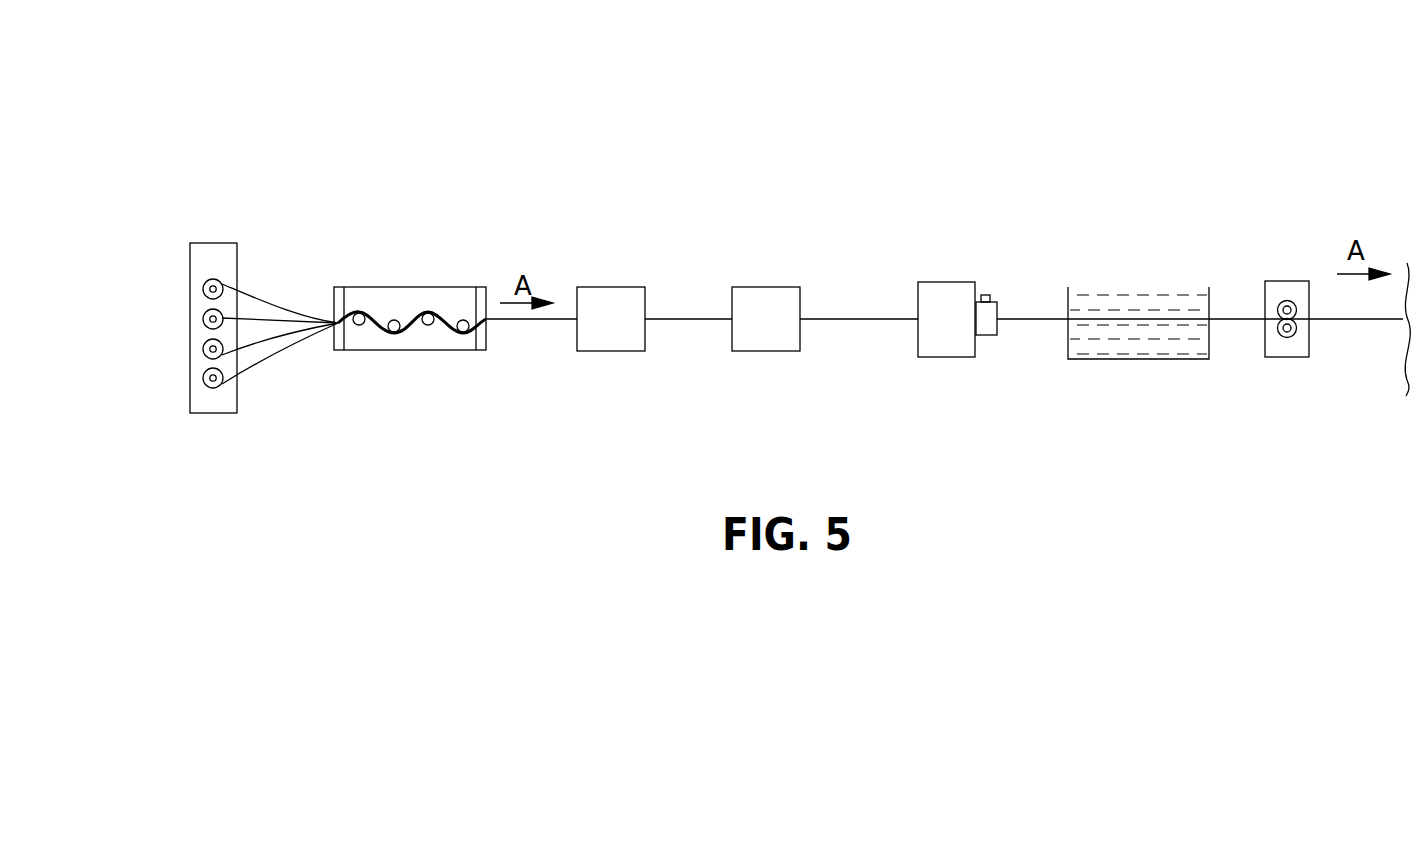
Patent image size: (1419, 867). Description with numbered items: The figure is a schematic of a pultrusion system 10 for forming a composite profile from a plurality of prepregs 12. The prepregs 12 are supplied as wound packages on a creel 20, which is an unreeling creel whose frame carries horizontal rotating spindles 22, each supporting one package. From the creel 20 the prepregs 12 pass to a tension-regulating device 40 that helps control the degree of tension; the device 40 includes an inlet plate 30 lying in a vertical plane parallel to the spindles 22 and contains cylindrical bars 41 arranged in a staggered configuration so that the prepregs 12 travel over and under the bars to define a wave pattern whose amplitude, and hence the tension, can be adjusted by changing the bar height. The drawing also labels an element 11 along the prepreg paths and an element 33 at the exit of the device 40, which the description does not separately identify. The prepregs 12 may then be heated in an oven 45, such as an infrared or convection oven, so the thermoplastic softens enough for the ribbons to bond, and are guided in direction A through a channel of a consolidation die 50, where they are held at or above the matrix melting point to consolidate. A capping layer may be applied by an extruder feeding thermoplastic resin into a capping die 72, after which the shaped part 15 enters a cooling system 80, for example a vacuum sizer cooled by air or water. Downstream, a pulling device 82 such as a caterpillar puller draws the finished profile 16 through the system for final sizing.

The cable manufacturing system 10 is at (283, 120).
The creel 20 is at (211, 248).
The rotating spindles 22 is at (212, 349).
The conductors / wires 11 is at (256, 375).
The prepregs 12 is at (375, 317).
The inlet plate 30 is at (343, 352).
The tension-regulating device 40 is at (373, 352).
The cylindrical bars 41 is at (394, 325).
The outlet guide 33 is at (478, 352).
The oven 45 is at (607, 333).
The consolidation die 50 is at (769, 333).
The shaped part 15 is at (1028, 318).
The capping die 72 is at (982, 328).
The cooling system 80 is at (1148, 260).
The pulling device 82 is at (1287, 357).
The finished profile 16 is at (1358, 318).